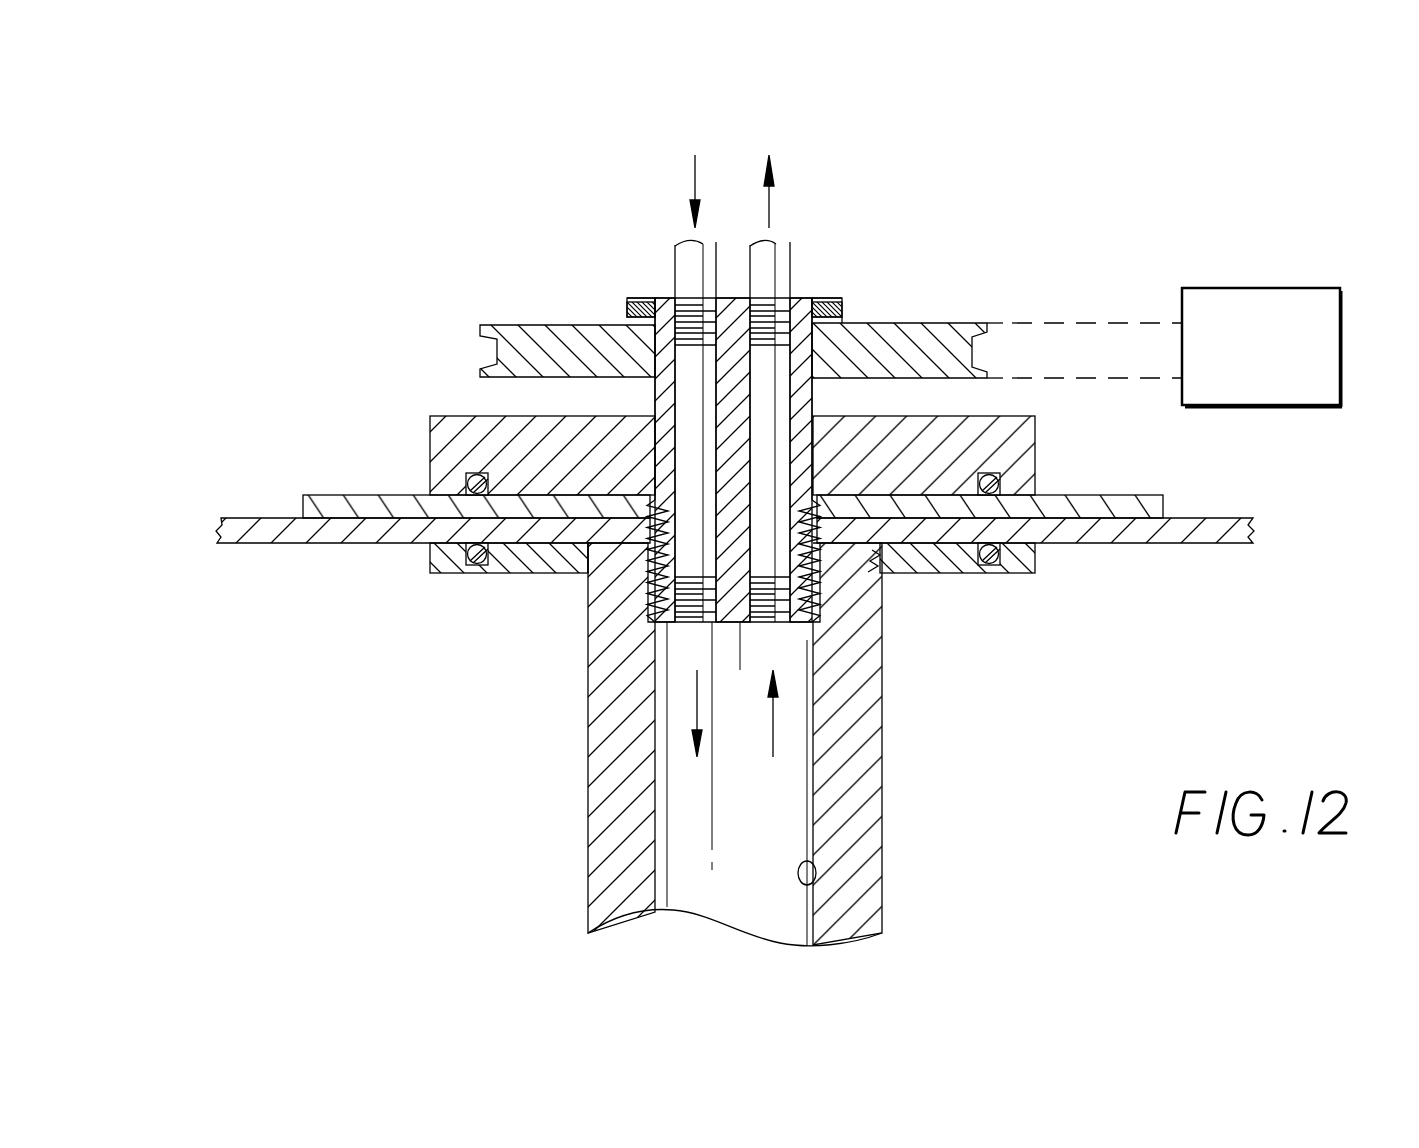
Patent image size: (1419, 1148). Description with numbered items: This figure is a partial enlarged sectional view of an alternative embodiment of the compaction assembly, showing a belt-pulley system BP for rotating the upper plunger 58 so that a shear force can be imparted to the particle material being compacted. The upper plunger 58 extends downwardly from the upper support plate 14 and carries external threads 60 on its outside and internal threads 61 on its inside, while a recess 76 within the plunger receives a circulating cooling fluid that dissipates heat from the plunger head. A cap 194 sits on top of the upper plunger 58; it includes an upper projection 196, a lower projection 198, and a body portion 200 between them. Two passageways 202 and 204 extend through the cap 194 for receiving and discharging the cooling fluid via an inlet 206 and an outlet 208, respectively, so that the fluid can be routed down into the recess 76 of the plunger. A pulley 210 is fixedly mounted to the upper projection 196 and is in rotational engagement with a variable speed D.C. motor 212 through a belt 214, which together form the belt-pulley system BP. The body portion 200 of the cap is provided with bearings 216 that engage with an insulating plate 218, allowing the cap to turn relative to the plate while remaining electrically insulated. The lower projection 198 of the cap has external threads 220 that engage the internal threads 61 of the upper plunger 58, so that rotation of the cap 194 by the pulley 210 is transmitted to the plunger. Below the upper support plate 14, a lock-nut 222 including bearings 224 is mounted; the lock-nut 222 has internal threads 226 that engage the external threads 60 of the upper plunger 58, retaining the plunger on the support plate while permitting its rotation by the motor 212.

The upper support plate 14 is at (228, 518).
The upper plunger 58 is at (882, 753).
The external threads 60 is at (870, 577).
The internal threads 61 is at (663, 630).
The recess 76 is at (816, 877).
The cap 194 is at (430, 405).
The upper projection 196 is at (653, 402).
The lower projection 198 is at (588, 572).
The body portion 200 is at (428, 430).
The passageway 202 is at (687, 368).
The passageway 204 is at (822, 300).
The inlet 206 is at (705, 247).
The outlet 208 is at (778, 265).
The pulley 210 is at (950, 323).
The variable speed D.C. motor 212 is at (1315, 288).
The belt 214 is at (1115, 323).
The bearings 216 is at (467, 482).
The insulating plate 218 is at (303, 507).
The external threads 220 is at (650, 608).
The lock-nut 222 is at (1038, 565).
The bearings 224 is at (997, 573).
The internal threads 226 is at (906, 572).
The belt-pulley system BP is at (547, 258).